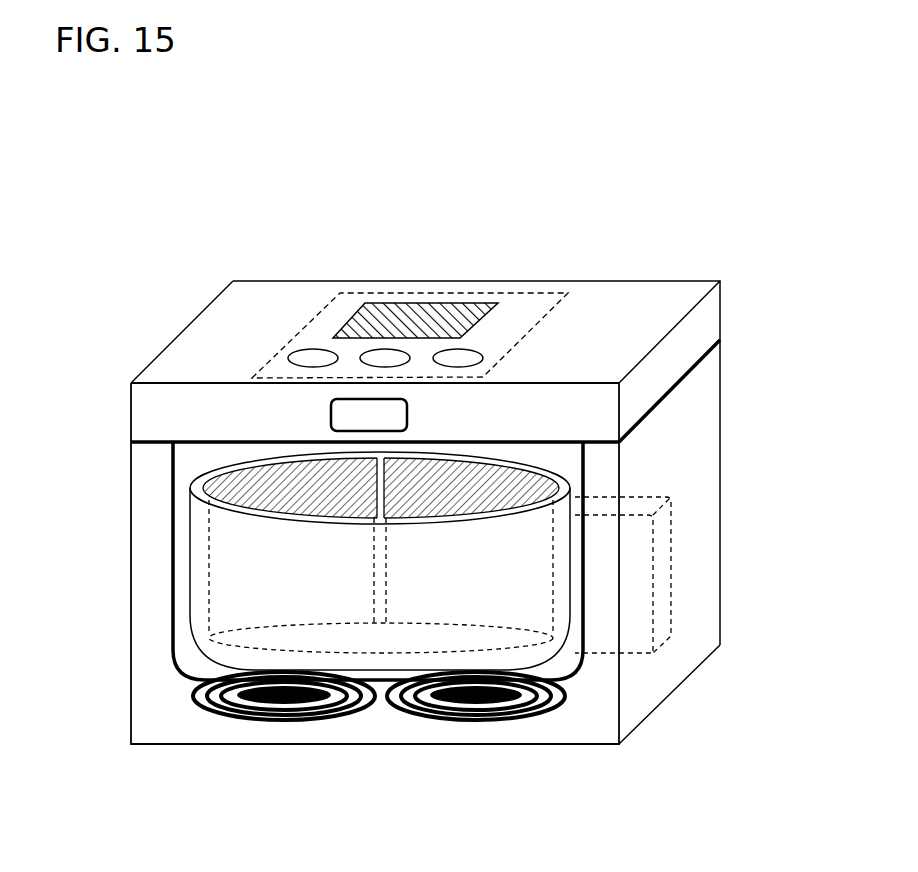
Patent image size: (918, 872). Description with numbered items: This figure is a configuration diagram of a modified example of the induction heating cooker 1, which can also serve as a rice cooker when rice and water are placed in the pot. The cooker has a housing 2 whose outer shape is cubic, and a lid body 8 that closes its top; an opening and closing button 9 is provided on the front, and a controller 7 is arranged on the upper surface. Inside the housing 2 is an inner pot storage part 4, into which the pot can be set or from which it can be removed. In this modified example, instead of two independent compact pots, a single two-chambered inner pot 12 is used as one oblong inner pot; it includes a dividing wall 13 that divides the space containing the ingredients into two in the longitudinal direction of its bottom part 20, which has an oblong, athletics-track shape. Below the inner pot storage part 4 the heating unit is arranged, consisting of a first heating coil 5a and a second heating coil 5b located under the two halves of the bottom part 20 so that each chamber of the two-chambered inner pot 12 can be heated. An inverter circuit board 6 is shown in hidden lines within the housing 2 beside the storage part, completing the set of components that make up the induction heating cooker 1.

The induction heating cooker 1 is at (742, 220).
The housing 2 is at (693, 407).
The inner pot storage part 4 is at (173, 462).
The first heating coil 5a is at (277, 720).
The second heating coil 5b is at (478, 722).
The inverter circuit board 6 is at (667, 588).
The controller 7 is at (497, 293).
The lid body 8 is at (687, 342).
The opening and closing button 9 is at (360, 415).
The two-chambered inner pot 12 is at (192, 632).
The dividing wall 13 is at (373, 499).
The bottom part 20 is at (503, 640).